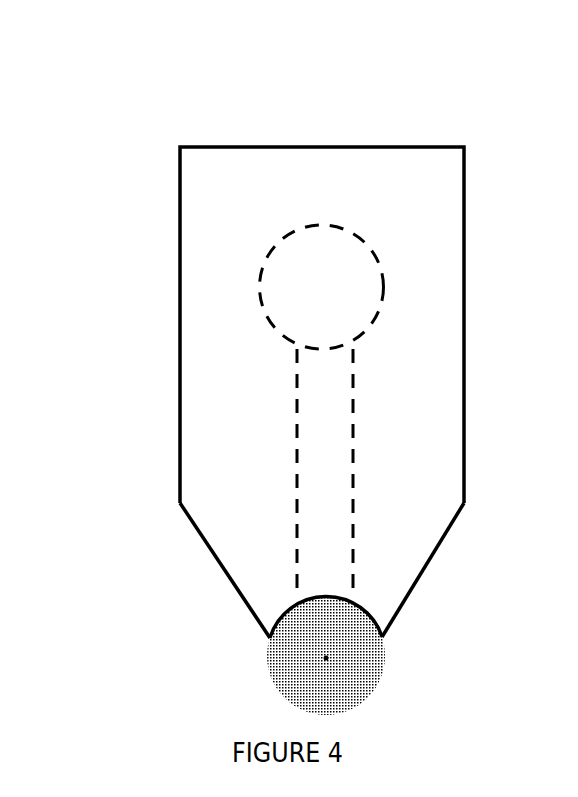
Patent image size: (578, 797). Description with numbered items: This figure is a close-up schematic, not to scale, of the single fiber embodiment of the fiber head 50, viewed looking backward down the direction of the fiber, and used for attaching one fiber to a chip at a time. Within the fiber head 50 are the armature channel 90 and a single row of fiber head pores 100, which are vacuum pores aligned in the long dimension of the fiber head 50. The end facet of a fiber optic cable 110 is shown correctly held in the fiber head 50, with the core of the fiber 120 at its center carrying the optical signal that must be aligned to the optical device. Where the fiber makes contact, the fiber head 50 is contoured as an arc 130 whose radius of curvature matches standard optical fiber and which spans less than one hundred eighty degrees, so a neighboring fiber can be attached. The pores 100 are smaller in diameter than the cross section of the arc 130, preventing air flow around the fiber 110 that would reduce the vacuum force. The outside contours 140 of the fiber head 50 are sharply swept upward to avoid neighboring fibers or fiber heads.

The fiber head 50 is at (163, 138).
The armature channel 90 is at (252, 288).
The fiber head pores 100 is at (283, 445).
The fiber optic cable 110 is at (260, 660).
The core of the fiber 120 is at (340, 657).
The arc 130 is at (378, 612).
The outside contours 140 is at (210, 573).